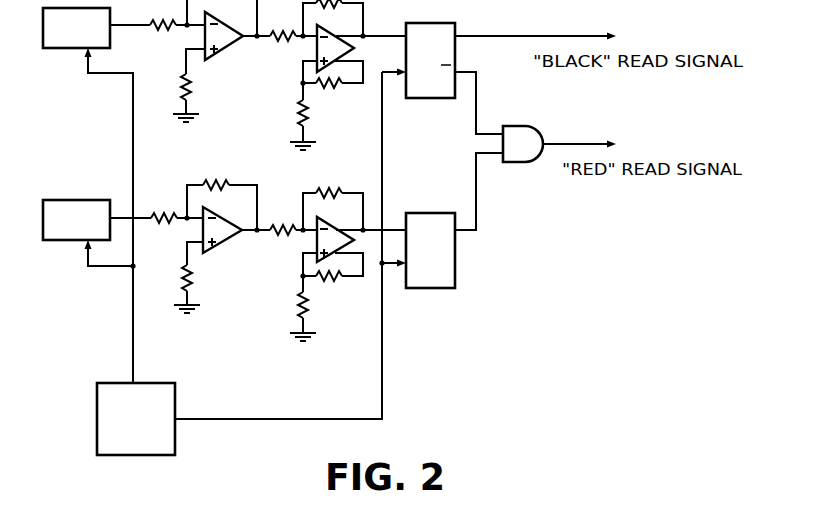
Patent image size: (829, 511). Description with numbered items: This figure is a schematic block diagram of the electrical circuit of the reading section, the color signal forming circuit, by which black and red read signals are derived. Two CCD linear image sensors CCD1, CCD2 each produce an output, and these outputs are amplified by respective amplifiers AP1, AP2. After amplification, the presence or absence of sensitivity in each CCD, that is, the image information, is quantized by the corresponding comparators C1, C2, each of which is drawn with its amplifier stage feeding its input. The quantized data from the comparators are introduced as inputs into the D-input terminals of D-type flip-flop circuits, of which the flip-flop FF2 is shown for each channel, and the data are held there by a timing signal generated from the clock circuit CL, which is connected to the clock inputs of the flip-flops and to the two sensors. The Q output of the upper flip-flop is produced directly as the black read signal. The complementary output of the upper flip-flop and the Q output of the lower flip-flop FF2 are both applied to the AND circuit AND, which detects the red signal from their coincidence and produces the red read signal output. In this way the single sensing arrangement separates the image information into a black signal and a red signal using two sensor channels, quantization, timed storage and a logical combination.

The CCD linear image sensor CCD1 is at (76, 28).
The CCD linear image sensor CCD2 is at (76, 220).
The amplifier AP1 is at (228, 50).
The amplifier AP2 is at (222, 244).
The comparator C1 is at (354, 50).
The comparator C2 is at (312, 243).
The D-type flip-flop circuit FF2 is at (456, 52).
The AND circuit AND is at (523, 144).
The clock circuit CL is at (113, 457).